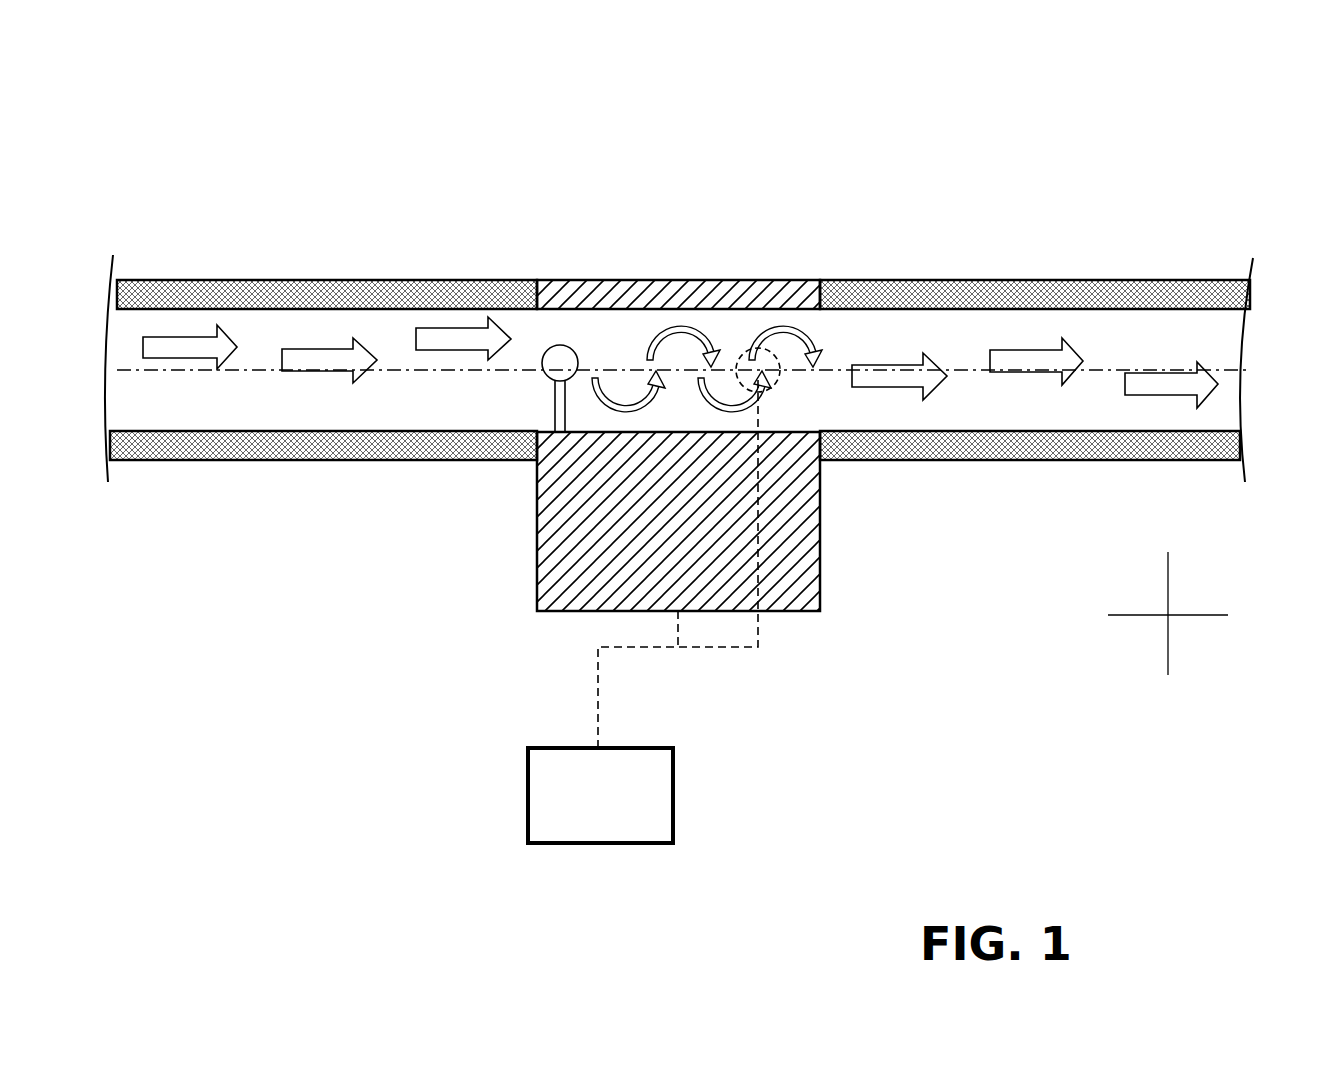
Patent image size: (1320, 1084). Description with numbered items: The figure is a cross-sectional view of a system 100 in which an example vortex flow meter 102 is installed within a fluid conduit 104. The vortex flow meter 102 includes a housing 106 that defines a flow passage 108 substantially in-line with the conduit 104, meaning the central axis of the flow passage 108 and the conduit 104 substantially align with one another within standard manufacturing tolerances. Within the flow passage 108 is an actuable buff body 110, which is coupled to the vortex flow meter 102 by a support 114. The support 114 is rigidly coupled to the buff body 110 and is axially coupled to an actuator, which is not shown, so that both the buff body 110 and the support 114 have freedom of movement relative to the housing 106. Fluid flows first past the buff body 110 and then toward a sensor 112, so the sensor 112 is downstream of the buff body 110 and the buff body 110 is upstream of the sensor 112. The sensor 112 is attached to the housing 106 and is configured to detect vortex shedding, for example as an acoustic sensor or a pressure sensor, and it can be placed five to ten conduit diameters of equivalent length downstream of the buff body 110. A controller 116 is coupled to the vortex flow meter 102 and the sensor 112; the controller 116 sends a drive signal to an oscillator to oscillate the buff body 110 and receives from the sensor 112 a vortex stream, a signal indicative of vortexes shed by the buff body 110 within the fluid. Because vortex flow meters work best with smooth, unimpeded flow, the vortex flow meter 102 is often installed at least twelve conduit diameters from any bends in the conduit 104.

The system 100 is at (999, 143).
The vortex flow meter 102 is at (564, 217).
The fluid conduit 104 is at (243, 290).
The housing 106 is at (657, 288).
The flow passage 108 is at (160, 408).
The actuable buff body 110 is at (548, 377).
The sensor 112 is at (760, 350).
The support 114 is at (553, 405).
The controller 116 is at (622, 813).